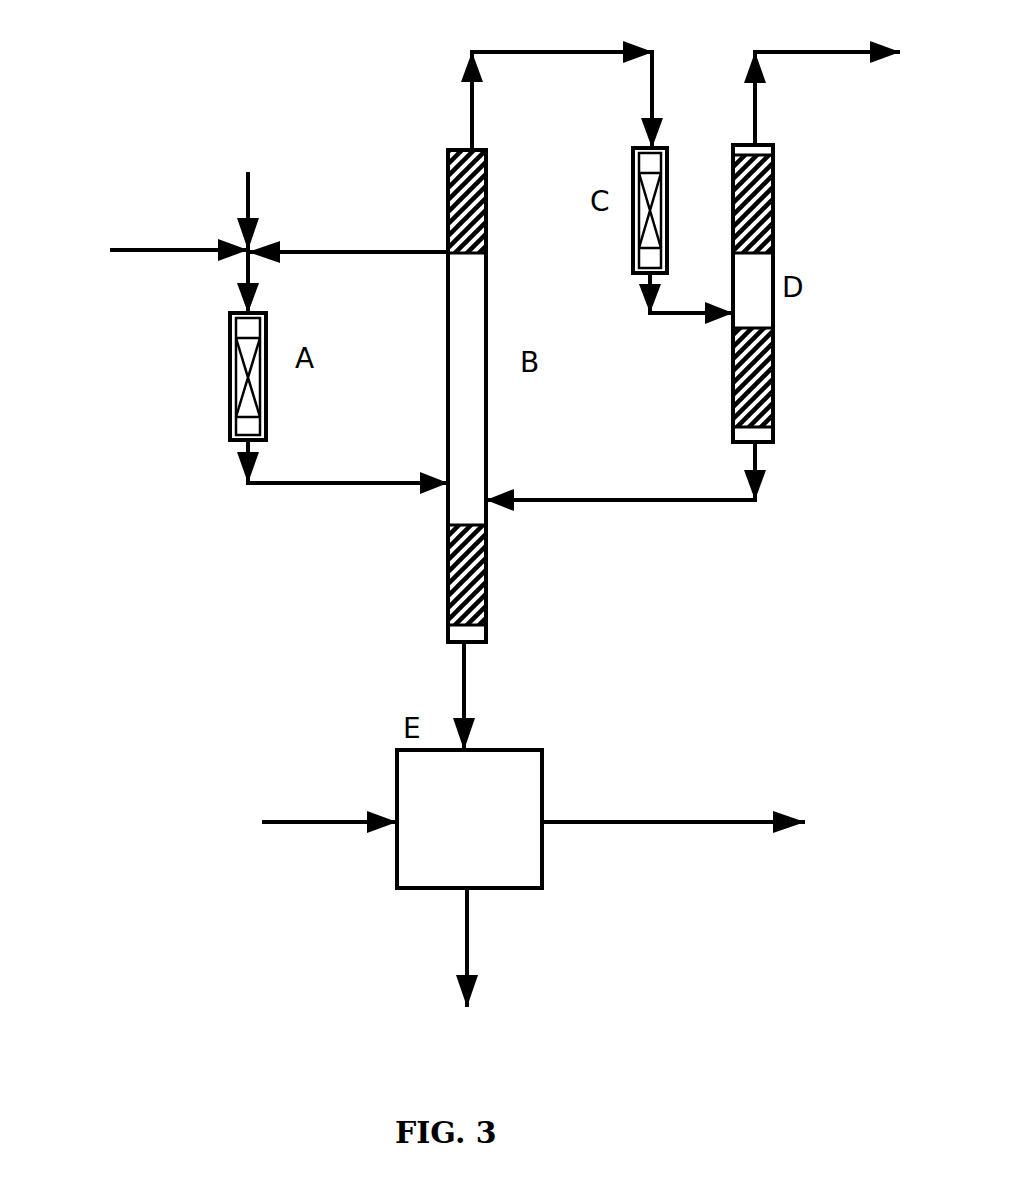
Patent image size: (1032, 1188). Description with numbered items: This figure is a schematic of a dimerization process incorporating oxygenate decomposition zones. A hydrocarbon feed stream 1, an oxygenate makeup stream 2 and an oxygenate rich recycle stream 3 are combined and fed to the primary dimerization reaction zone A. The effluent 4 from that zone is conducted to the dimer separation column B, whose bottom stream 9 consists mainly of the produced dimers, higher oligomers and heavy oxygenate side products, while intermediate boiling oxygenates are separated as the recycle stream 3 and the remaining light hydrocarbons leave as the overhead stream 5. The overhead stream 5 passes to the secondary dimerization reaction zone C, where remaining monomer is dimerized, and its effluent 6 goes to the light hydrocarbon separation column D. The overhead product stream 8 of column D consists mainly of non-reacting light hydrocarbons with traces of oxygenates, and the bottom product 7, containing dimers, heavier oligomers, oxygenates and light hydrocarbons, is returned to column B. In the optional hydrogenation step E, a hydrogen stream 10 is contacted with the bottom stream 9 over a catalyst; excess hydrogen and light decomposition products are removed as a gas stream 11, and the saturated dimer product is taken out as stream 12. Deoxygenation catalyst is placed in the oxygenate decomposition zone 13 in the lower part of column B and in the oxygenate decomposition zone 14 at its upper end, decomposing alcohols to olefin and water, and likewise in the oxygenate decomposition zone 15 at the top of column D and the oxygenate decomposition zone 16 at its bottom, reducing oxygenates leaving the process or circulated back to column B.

The hydrocarbon feed stream 1 is at (149, 239).
The oxygenate makeup stream 2 is at (232, 202).
The oxygenate rich recycle stream 3 is at (348, 235).
The effluent 4 is at (342, 500).
The overhead stream 5 is at (562, 78).
The effluent 6 is at (670, 301).
The bottom product 7 is at (626, 503).
The overhead product stream 8 is at (822, 93).
The bottom stream 9 is at (488, 696).
The hydrogen stream 10 is at (321, 785).
The gas stream 11 is at (673, 799).
The saturated dimer product stream 12 is at (508, 947).
The oxygenate decomposition zone 13 is at (463, 588).
The oxygenate decomposition zone 14 is at (447, 170).
The oxygenate decomposition zone 15 is at (772, 193).
The oxygenate decomposition zone 16 is at (762, 378).